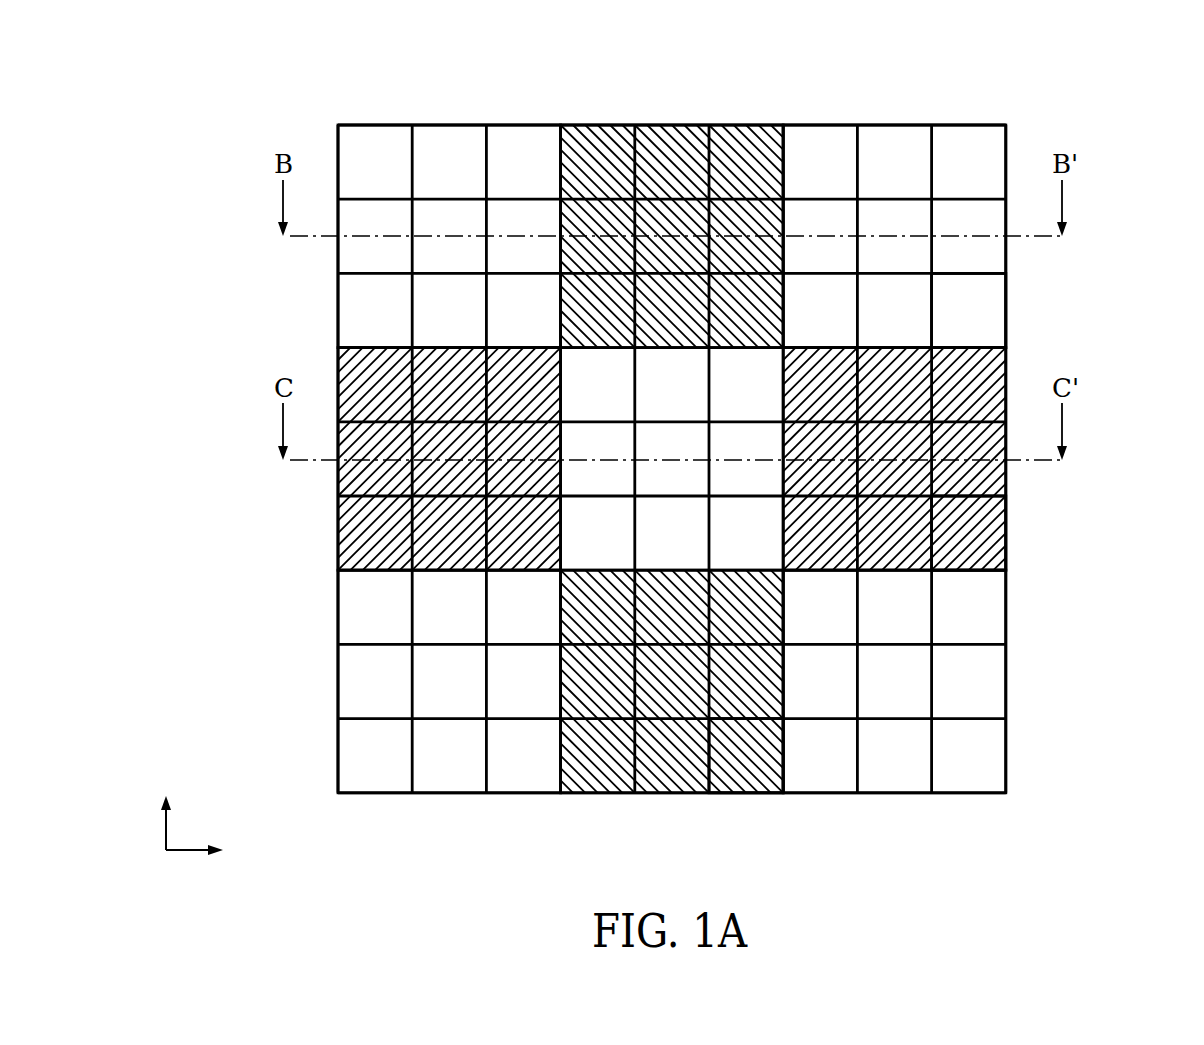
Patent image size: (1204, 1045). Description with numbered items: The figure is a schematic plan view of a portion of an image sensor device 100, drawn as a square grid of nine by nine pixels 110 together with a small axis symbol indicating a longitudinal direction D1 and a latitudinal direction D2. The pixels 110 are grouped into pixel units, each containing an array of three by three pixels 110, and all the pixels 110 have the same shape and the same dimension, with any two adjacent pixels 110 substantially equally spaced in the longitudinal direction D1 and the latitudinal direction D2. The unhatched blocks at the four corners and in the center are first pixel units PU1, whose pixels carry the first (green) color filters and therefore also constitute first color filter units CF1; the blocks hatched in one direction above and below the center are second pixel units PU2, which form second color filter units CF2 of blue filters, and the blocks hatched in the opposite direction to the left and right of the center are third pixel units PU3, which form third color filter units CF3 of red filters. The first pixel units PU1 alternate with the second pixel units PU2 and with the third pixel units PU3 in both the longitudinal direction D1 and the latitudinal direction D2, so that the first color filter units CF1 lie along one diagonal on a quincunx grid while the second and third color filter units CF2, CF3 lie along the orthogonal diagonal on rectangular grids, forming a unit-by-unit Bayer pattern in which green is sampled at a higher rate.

The image sensor device 100 is at (1187, 56).
The pixel 110 is at (990, 310).
The first pixel unit PU1 is at (449, 104).
The first color filter unit CF1 is at (449, 816).
The second pixel unit PU2 is at (670, 104).
The second color filter unit CF2 is at (670, 816).
The third pixel unit PU3 is at (318, 496).
The third color filter unit CF3 is at (1028, 498).
The longitudinal direction D1 is at (165, 807).
The latitudinal direction D2 is at (212, 851).